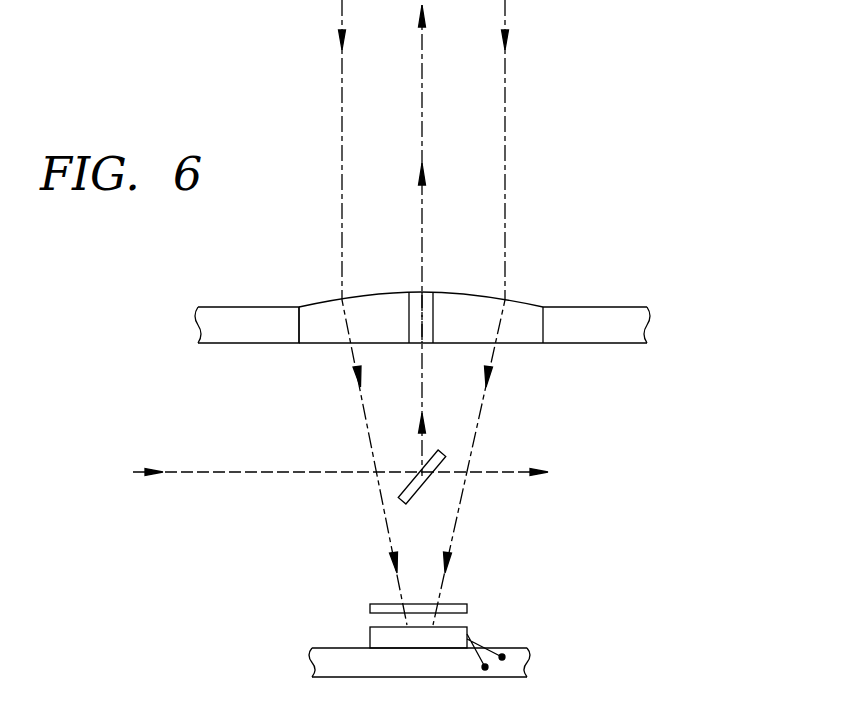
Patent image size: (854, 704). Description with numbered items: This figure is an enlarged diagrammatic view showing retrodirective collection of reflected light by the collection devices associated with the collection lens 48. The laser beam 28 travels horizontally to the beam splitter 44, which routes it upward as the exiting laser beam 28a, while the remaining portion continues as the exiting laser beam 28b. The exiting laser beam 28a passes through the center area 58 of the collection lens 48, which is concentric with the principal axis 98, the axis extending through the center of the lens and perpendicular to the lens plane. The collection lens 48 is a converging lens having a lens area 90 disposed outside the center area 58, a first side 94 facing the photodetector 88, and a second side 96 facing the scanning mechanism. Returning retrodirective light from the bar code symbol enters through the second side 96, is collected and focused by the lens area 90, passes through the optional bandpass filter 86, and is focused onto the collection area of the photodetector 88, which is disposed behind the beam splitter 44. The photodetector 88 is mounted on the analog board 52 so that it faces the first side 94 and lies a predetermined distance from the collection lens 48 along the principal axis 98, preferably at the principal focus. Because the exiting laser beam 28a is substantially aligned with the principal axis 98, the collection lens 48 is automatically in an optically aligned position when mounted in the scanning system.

The laser beam 28 is at (243, 474).
The exiting laser beam 28a is at (423, 80).
The exiting laser beam 28b is at (486, 472).
The beam splitter 44 is at (424, 489).
The collection lens 48 is at (517, 322).
The analog board 52 is at (330, 648).
The center area 58 is at (430, 292).
The bandpass filter 86 is at (450, 603).
The photodetector 88 is at (470, 628).
The lens area 90 is at (360, 294).
The first side 94 is at (518, 345).
The second side 96 is at (477, 294).
The principal axis 98 is at (422, 317).